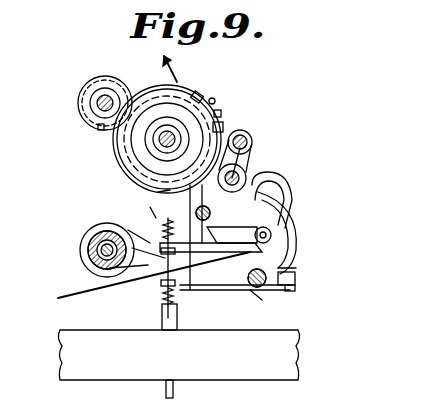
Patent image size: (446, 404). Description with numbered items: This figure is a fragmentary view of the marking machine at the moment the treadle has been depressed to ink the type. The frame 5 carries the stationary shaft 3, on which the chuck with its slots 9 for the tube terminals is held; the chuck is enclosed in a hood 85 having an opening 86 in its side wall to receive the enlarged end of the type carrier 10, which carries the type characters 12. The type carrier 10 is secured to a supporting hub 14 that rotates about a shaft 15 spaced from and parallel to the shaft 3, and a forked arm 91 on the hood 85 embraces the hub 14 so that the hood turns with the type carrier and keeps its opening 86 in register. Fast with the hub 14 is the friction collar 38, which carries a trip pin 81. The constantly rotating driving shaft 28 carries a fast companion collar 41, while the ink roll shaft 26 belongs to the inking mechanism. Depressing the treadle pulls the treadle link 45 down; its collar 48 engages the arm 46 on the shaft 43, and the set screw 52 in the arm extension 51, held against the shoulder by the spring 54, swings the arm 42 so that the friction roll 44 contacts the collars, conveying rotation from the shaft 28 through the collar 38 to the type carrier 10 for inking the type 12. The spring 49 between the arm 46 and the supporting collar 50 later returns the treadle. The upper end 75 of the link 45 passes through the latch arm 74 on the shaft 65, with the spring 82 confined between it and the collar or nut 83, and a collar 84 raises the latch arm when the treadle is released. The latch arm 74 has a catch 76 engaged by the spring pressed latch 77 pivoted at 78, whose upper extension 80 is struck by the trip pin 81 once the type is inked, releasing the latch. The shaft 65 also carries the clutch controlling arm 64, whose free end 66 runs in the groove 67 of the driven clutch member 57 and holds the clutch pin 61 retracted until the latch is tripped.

The stationary shaft 3 is at (90, 106).
The frame 5 is at (228, 370).
The slots 9 is at (109, 77).
The type carrier 10 is at (214, 98).
The type characters 12 is at (219, 113).
The supporting hub 14 is at (224, 125).
The shaft 15 is at (170, 135).
The ink roll shaft 26 is at (252, 141).
The driving shaft 28 is at (250, 166).
The friction collar 38 is at (183, 87).
The companion collar 41 is at (255, 174).
The arm 42 is at (296, 233).
The shaft 43 is at (262, 292).
The friction roll 44 is at (278, 178).
The treadle link 45 is at (166, 391).
The arm 46 is at (242, 292).
The collar 48 is at (160, 282).
The spring 49 is at (178, 308).
The supporting collar 50 is at (162, 316).
The arm extension 51 is at (294, 288).
The set screw 52 is at (296, 276).
The spring 54 is at (292, 262).
The driven clutch member 57 is at (88, 250).
The clutch pin 61 is at (112, 263).
The clutch controlling arm 64 is at (118, 277).
The shaft 65 is at (288, 212).
The free end 66 is at (60, 296).
The groove 67 is at (87, 233).
The latch arm 74 is at (197, 287).
The upper end 75 is at (165, 233).
The catch 76 is at (249, 279).
The latch 77 is at (211, 211).
The pivot 78 is at (220, 219).
The upper extension 80 is at (150, 172).
The trip pin 81 is at (156, 194).
The spring 82 is at (156, 219).
The collar or nut 83 is at (172, 221).
The collar 84 is at (120, 228).
The hood 85 is at (99, 78).
The opening 86 is at (98, 128).
The forked arm 91 is at (130, 160).